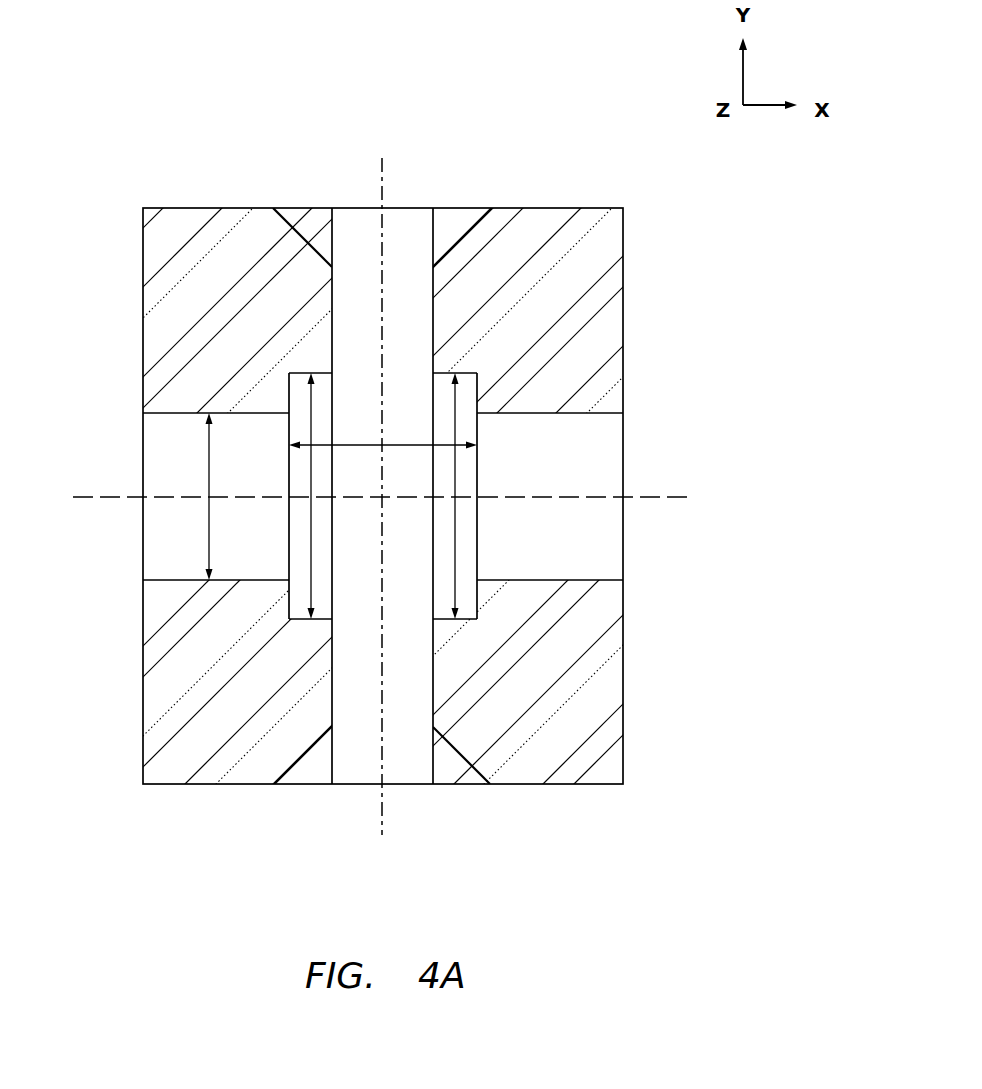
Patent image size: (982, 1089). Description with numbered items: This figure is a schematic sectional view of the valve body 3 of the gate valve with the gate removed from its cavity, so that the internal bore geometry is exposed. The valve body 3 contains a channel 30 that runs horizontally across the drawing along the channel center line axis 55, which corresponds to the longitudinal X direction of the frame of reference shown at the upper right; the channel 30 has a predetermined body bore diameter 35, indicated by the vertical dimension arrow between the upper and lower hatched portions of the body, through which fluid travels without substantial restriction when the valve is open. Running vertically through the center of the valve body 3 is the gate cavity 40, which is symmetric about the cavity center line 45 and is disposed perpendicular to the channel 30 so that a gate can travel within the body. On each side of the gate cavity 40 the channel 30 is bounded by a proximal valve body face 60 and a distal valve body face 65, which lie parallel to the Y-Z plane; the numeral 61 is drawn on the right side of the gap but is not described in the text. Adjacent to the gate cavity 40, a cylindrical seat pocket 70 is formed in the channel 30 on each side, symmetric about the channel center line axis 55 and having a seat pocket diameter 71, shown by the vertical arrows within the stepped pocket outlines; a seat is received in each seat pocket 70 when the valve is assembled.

The valve body 3 is at (230, 222).
The channel 30 is at (155, 560).
The body bore diameter 35 is at (208, 520).
The gate cavity 40 is at (412, 220).
The cavity center line 45 is at (381, 170).
The channel center line axis 55 is at (102, 498).
The proximal valve body face 60 is at (289, 462).
The second gap region 61 is at (477, 458).
The distal valve body face 65 is at (468, 515).
The seat pocket 70 is at (300, 612).
The seat pocket diameter 71 is at (295, 405).